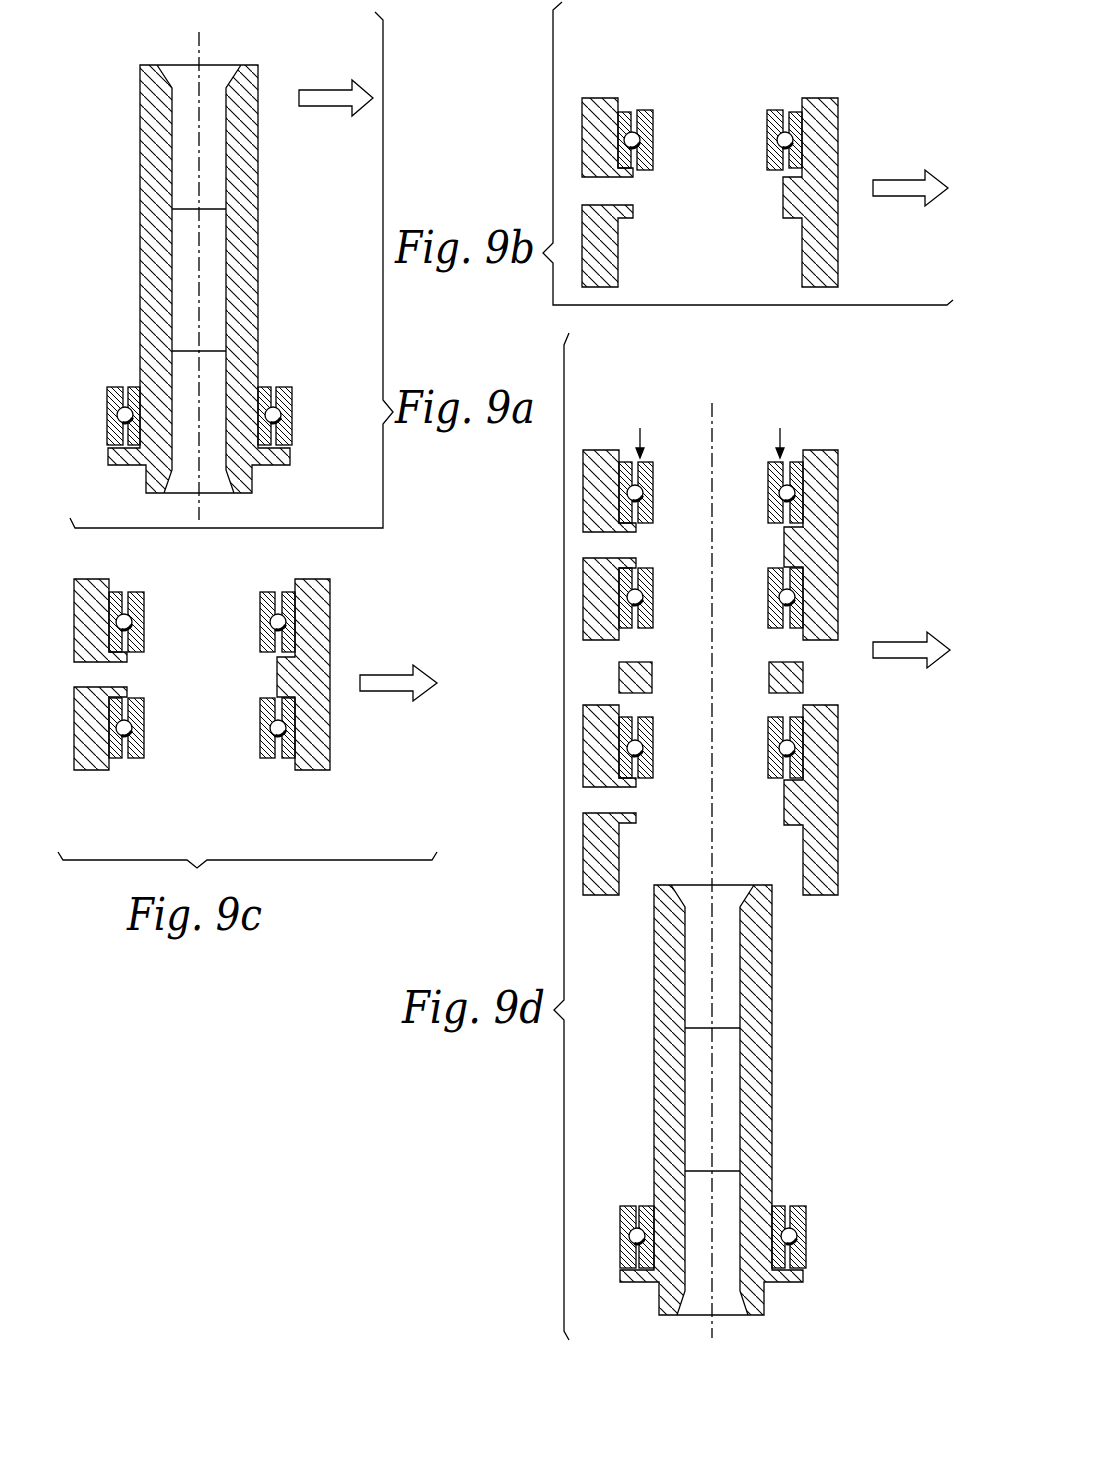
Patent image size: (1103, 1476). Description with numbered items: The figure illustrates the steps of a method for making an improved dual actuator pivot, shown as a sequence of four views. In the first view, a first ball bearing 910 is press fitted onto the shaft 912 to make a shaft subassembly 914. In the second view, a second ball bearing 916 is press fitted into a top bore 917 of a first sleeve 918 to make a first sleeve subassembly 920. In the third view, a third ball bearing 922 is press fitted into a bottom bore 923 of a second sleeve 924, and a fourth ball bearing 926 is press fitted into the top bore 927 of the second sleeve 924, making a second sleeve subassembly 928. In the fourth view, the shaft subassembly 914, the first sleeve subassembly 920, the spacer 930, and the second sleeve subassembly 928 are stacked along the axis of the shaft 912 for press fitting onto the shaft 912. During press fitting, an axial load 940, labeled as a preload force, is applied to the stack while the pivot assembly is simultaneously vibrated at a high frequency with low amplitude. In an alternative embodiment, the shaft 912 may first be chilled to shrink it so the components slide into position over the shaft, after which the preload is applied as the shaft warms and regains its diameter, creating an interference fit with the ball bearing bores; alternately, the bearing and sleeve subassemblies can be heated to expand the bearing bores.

In FIG. 9A, the first ball bearing 910 is at (293, 404).
In FIG. 9A, the shaft 912 is at (252, 480).
In FIG. 9D, the shaft 912 is at (772, 1100).
In FIG. 9A, the subassembly 914 is at (285, 68).
In FIG. 9D, the subassembly 914 is at (815, 1013).
In FIG. 9B, the second ball bearing 916 is at (772, 110).
In FIG. 9B, the top bore 917 is at (795, 110).
In FIG. 9B, the first sleeve 918 is at (838, 247).
In FIG. 9B, the subassembly 920 is at (813, 38).
In FIG. 9D, the subassembly 920 is at (845, 755).
In FIG. 9C, the third ball bearing 922 is at (258, 748).
In FIG. 9C, the bottom bore 923 is at (289, 758).
In FIG. 9C, the second sleeve 924 is at (332, 645).
In FIG. 9C, the fourth ball bearing 926 is at (258, 640).
In FIG. 9C, the top bore 927 is at (289, 592).
In FIG. 9C, the subassembly 928 is at (160, 800).
In FIG. 9D, the subassembly 928 is at (842, 515).
In FIG. 9D, the spacer 930 is at (808, 665).
In FIG. 9D, the axial load 940 is at (773, 354).